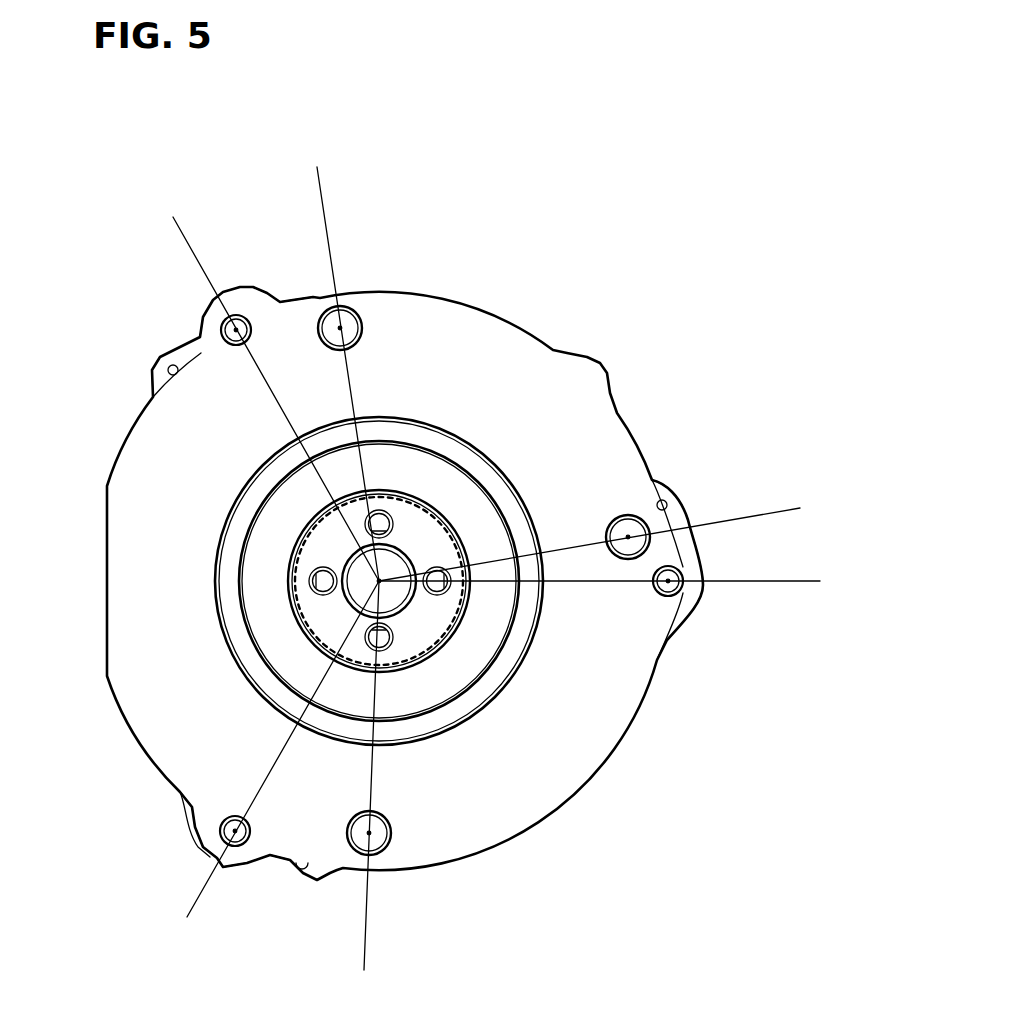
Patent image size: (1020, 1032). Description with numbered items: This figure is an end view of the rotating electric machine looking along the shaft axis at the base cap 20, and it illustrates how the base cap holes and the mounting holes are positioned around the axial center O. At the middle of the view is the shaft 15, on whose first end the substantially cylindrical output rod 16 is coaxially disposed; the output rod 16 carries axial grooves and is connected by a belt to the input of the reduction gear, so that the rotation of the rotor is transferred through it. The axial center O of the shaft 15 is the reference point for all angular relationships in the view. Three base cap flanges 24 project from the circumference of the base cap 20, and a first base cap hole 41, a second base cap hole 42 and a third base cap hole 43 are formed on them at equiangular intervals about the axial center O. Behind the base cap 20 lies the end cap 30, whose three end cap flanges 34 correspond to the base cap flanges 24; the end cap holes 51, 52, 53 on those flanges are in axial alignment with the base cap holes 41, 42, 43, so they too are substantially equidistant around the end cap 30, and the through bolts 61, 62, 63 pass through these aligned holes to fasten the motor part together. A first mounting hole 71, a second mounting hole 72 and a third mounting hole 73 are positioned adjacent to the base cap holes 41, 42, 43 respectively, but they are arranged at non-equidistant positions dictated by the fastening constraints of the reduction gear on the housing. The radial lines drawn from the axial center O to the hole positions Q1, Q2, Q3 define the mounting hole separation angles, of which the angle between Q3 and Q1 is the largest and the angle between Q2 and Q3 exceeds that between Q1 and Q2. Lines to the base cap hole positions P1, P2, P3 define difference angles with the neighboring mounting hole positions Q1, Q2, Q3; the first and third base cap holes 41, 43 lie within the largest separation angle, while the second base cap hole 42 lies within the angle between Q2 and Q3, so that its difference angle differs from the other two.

The shaft 15 is at (391, 594).
The output rod 16 is at (350, 653).
The base cap 20 is at (590, 758).
The base cap flange 24 is at (303, 317).
The end cap 30 is at (160, 367).
The end cap flange 34 is at (187, 350).
The first base cap hole 41 is at (227, 320).
The second base cap hole 42 is at (676, 596).
The third base cap hole 43 is at (222, 823).
The first end cap hole 51 is at (250, 317).
The second end cap hole 52 is at (675, 577).
The third end cap hole 53 is at (233, 845).
The first through bolt 61 is at (247, 317).
The second through bolt 62 is at (681, 590).
The third through bolt 63 is at (222, 831).
The first mounting hole 71 is at (356, 313).
The second mounting hole 72 is at (633, 518).
The third mounting hole 73 is at (387, 845).
The first base cap hole position P1 is at (237, 325).
The second base cap hole position P2 is at (672, 580).
The third base cap hole position P3 is at (270, 749).
The first mounting hole position Q1 is at (341, 327).
The second mounting hole position Q2 is at (628, 537).
The third mounting hole position Q3 is at (370, 834).
The axial center O is at (370, 581).